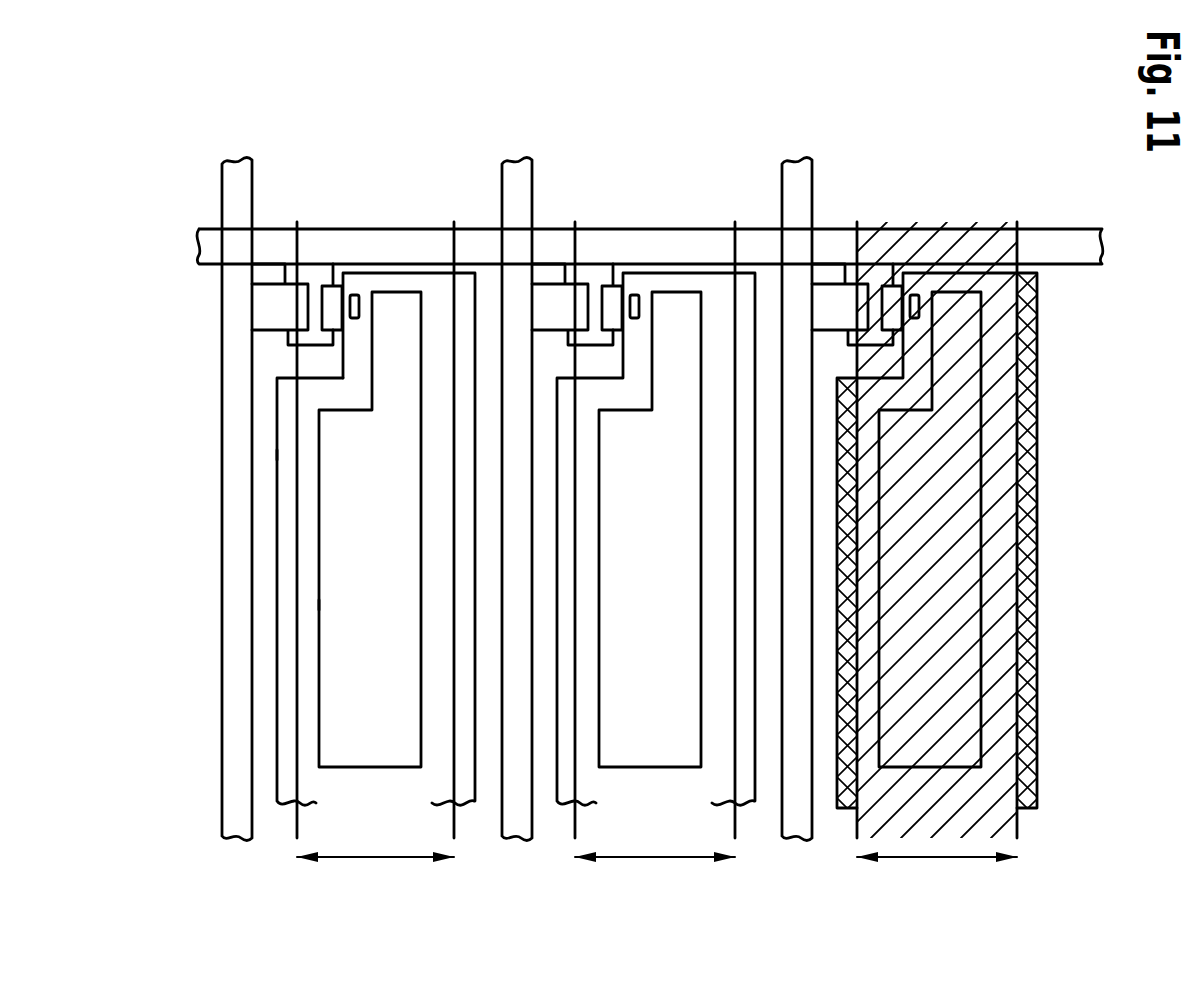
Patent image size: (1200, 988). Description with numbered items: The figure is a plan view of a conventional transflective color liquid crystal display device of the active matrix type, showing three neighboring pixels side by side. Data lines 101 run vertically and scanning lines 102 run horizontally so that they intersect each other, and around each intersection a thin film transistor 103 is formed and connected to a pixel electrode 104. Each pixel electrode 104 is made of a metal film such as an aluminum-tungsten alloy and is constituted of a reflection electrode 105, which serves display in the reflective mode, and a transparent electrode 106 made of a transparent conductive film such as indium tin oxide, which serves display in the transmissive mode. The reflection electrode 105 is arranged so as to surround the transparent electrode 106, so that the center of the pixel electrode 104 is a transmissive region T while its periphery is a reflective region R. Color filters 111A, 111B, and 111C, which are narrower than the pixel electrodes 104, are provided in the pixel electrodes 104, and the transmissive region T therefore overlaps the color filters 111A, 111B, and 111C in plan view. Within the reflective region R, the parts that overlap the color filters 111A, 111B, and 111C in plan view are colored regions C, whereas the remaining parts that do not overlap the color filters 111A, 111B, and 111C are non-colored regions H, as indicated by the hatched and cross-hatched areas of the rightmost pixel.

The data line 101 is at (235, 535).
The scanning line 102 is at (650, 247).
The thin film transistor 103 is at (306, 252).
The pixel electrode 104 is at (117, 718).
The reflection electrode 105 is at (285, 695).
The transparent electrode 106 is at (350, 637).
The color filter 111A is at (375, 878).
The color filter 111B is at (655, 878).
The color filter 111C is at (937, 878).
The reflective region R is at (283, 453).
The transmissive region T is at (347, 530).
The colored region C is at (1000, 423).
The non-colored region H is at (858, 533).